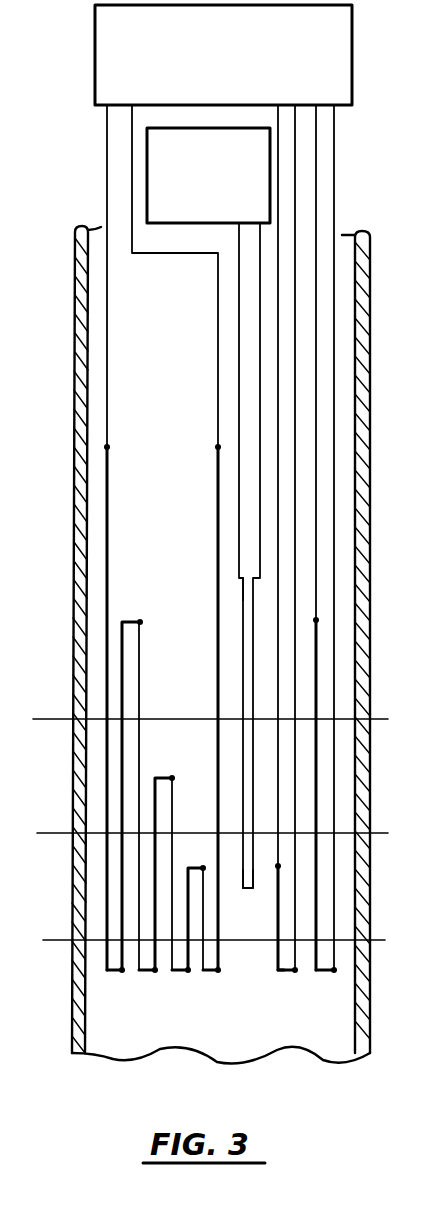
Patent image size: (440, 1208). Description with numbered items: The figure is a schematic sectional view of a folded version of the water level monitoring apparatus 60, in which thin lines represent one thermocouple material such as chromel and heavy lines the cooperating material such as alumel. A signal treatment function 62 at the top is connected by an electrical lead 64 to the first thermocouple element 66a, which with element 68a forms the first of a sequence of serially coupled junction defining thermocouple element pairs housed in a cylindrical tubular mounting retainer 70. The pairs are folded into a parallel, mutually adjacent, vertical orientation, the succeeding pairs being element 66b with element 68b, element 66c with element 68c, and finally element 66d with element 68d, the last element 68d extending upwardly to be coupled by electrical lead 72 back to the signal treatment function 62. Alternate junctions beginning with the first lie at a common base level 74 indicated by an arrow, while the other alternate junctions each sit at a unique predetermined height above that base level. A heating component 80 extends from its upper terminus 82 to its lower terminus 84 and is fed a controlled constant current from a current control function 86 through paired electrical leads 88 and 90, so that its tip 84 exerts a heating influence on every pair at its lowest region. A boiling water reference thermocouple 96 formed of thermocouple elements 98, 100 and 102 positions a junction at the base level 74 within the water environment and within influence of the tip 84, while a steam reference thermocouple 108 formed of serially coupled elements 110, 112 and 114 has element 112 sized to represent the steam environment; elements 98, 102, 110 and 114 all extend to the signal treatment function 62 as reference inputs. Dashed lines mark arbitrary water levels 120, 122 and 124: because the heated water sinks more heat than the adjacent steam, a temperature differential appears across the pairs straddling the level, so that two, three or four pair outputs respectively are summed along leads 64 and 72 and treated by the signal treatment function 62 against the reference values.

The monitoring apparatus 60 is at (55, 333).
The signal treatment function 62 is at (95, 58).
The electrical lead 64 is at (107, 315).
The first thermocouple element 66a is at (107, 520).
The thermocouple element 66b is at (139, 679).
The thermocouple element 66c is at (173, 842).
The thermocouple element 66d is at (203, 956).
The thermocouple element 68a is at (120, 620).
The thermocouple element 68b is at (151, 780).
The thermocouple element 68c is at (190, 972).
The thermocouple element 68d is at (219, 968).
The cylindrical tubular mounting retainer 70 is at (396, 383).
The electrical lead 72 is at (218, 357).
The base level 74 is at (66, 1000).
The heating component 80 is at (246, 648).
The upper terminus 82 is at (243, 585).
The lower terminus 84 is at (247, 890).
The current control function 86 is at (147, 178).
The electrical lead 88 is at (239, 390).
The electrical lead 90 is at (260, 420).
The boiling water reference thermocouple 96 is at (286, 978).
The thermocouple element 98 is at (278, 478).
The thermocouple element 100 is at (282, 970).
The thermocouple element 102 is at (295, 522).
The steam reference thermocouple 108 is at (325, 982).
The thermocouple element 110 is at (316, 165).
The thermocouple element 112 is at (316, 672).
The thermocouple element 114 is at (334, 200).
The water level 120 is at (52, 719).
The water level 122 is at (52, 833).
The water level 124 is at (52, 940).